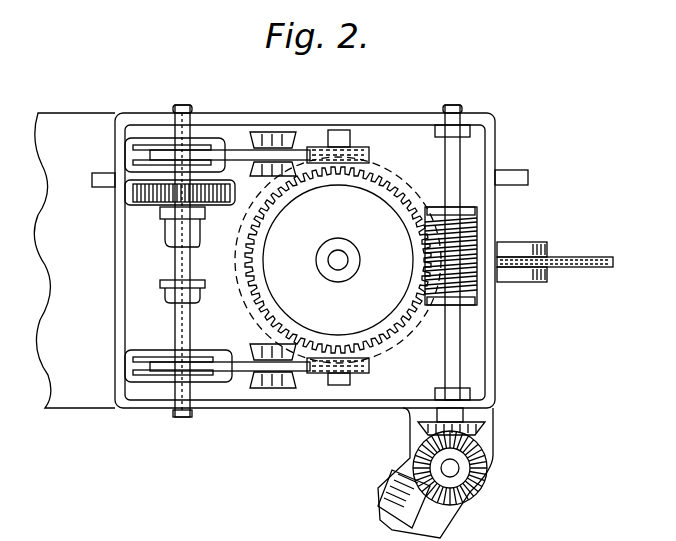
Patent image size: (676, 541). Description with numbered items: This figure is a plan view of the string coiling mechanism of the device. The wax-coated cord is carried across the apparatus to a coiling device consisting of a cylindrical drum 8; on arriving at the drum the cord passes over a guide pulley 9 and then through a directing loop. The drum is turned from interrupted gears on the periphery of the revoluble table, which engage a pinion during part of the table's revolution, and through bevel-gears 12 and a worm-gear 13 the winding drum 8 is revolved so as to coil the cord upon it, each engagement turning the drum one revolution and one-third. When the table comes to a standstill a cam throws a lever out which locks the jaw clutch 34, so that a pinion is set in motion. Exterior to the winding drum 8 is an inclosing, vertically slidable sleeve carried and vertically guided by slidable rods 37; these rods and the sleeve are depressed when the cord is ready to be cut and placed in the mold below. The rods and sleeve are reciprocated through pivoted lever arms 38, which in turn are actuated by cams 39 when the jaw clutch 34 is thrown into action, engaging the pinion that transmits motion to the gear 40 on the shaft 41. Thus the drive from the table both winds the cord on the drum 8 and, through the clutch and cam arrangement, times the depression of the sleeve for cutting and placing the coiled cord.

The cylindrical drum 8 is at (338, 260).
The guide pulley 9 is at (556, 259).
The bevel-gears 12 is at (490, 480).
The worm-gear 13 is at (478, 297).
The jaw clutch 34 is at (166, 232).
The slidable rods 37 is at (358, 147).
The pivoted lever arms 38 is at (238, 146).
The cams 39 is at (143, 147).
The gear 40 is at (140, 196).
The shaft 41 is at (176, 326).